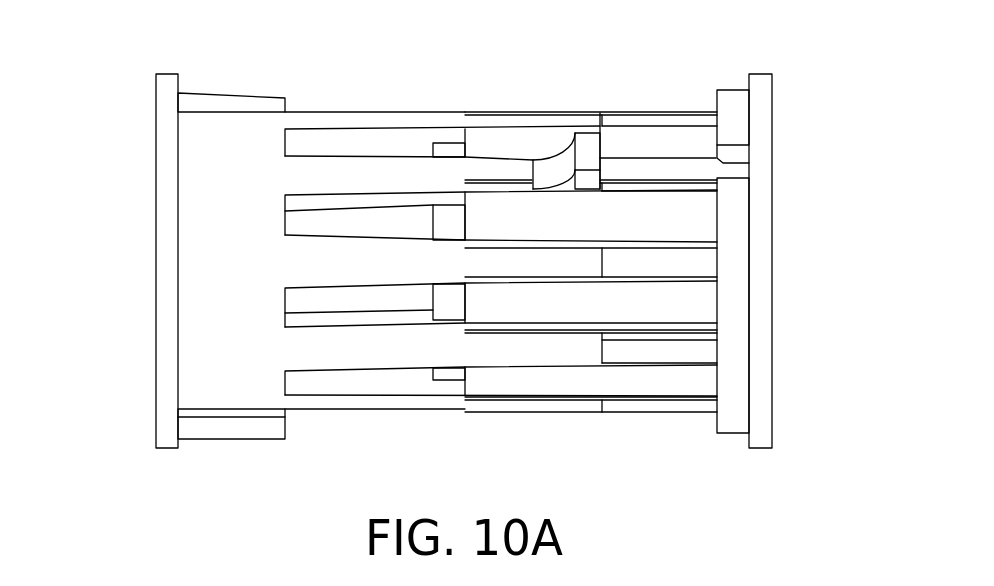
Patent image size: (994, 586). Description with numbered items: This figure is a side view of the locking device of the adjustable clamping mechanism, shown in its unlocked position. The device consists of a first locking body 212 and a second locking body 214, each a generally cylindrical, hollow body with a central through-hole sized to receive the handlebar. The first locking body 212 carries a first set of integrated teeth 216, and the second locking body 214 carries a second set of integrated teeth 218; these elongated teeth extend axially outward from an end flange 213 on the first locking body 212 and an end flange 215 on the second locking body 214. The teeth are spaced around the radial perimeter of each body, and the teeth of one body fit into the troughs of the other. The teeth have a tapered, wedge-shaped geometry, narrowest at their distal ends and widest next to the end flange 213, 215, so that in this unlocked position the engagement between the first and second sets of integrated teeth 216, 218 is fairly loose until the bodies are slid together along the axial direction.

The first locking body 212 is at (804, 113).
The end flange 213 is at (762, 449).
The second locking body 214 is at (126, 114).
The end flange 215 is at (165, 449).
The first set of integrated teeth 216 is at (688, 217).
The second set of integrated teeth 218 is at (528, 247).